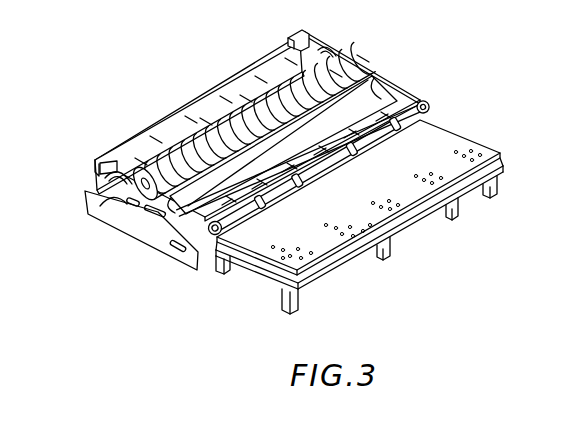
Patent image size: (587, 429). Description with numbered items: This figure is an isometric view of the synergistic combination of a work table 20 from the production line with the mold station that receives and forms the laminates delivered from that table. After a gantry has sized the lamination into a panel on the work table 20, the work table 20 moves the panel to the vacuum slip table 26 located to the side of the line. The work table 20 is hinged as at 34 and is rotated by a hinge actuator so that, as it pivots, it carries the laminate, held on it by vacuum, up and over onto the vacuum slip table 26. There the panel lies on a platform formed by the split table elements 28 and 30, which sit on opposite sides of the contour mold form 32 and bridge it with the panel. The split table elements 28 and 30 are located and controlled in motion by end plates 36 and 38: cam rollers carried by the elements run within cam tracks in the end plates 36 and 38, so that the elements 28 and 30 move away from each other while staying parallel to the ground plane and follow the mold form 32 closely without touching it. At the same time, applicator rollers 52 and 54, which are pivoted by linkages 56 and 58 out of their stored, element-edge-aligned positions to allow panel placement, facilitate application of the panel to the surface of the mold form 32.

The work table 20 is at (480, 152).
The vacuum slip table 26 is at (252, 144).
The split table element 28 is at (243, 93).
The split table element 30 is at (428, 104).
The contour mold form 32 is at (197, 157).
The hinge 34 is at (435, 120).
The end plate 36 is at (132, 222).
The end plate 38 is at (370, 62).
The applicator roller 52 is at (126, 152).
The applicator roller 54 is at (142, 165).
The linkage 56 is at (322, 52).
The linkage 58 is at (378, 93).